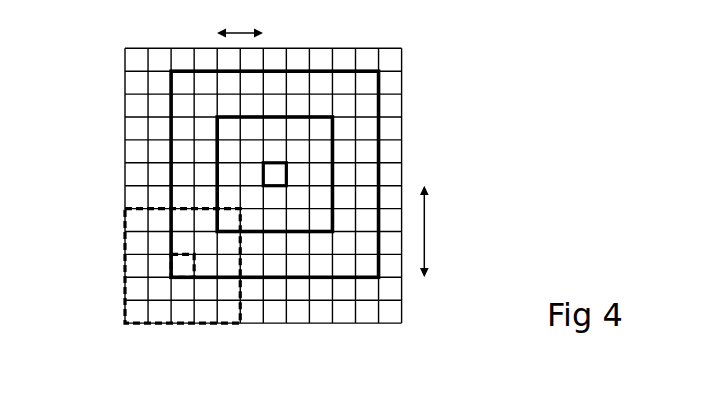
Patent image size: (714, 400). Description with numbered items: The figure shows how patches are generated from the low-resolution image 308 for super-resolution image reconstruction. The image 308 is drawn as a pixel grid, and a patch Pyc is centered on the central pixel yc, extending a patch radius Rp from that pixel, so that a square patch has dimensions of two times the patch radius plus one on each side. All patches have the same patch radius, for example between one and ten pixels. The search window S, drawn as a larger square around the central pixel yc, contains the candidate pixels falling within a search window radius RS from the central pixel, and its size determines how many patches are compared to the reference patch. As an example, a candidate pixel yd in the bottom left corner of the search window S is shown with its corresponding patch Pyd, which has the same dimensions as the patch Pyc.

The low-resolution image 308 is at (140, 48).
The patch radius Rp is at (240, 21).
The search window S is at (380, 103).
The patch Pyc is at (297, 117).
The central pixel yc is at (266, 163).
The search window radius RS is at (438, 232).
The patch Pyd is at (155, 208).
The candidate pixel yd is at (172, 261).